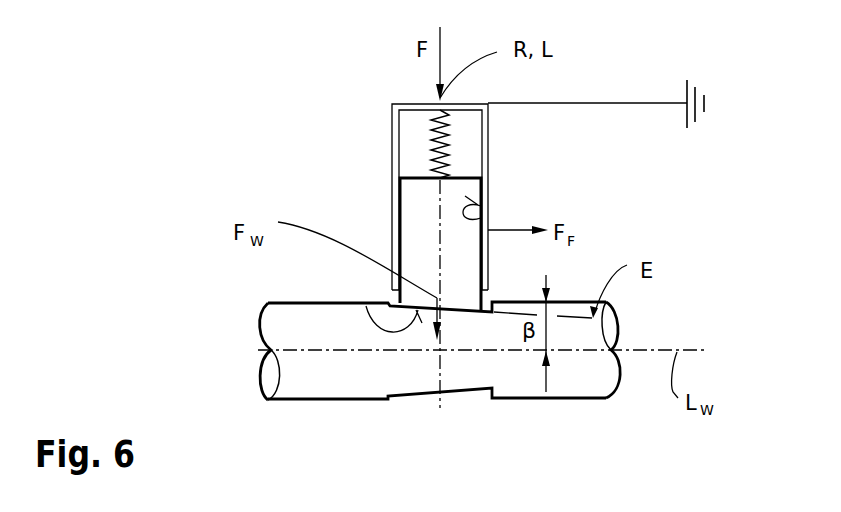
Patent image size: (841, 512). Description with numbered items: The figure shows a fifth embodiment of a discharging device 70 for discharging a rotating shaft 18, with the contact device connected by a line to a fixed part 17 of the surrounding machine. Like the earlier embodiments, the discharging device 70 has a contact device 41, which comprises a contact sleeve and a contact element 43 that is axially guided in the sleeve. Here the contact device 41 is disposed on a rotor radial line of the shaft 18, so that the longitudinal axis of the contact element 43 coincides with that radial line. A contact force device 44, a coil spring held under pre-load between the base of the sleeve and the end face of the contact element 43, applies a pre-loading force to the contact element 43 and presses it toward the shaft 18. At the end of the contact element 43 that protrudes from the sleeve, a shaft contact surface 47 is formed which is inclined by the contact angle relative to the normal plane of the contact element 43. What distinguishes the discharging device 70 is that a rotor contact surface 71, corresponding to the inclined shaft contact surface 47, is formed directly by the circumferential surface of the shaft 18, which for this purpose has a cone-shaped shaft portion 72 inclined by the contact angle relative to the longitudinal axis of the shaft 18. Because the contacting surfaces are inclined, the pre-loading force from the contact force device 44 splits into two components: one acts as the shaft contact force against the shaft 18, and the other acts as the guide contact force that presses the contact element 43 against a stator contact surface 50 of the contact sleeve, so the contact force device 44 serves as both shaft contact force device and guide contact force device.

The frame / fixed support 17 is at (714, 93).
The shaft 18 is at (588, 336).
The contact device 41 is at (506, 214).
The contact element 43 is at (412, 226).
The contact force device 44 is at (422, 139).
The shaft contact surface 47 is at (368, 306).
The stator contact surface 50 is at (495, 220).
The discharging device 70 is at (576, 89).
The rotor contact surface 71 is at (487, 306).
The cone-shaped shaft portion 72 is at (458, 372).